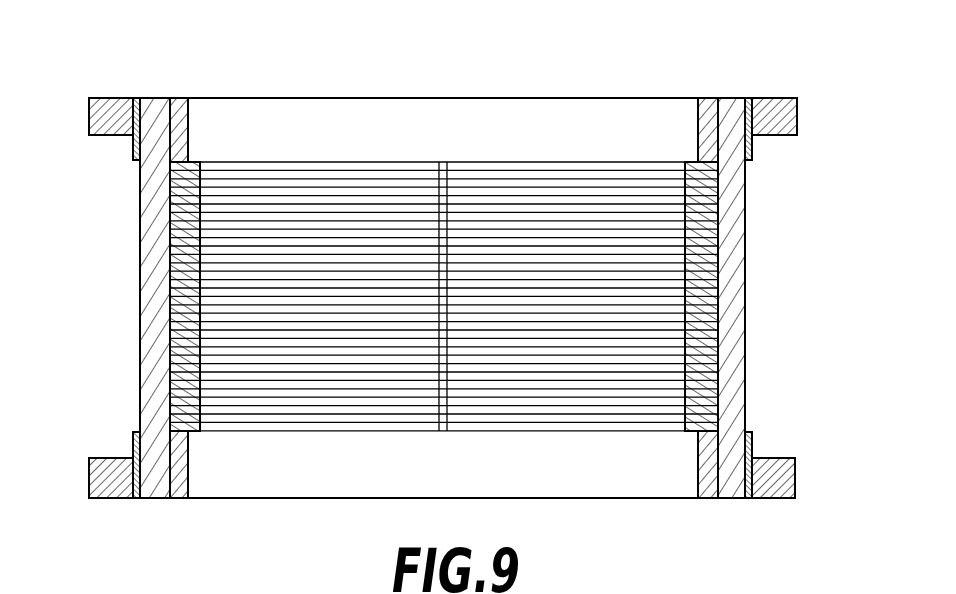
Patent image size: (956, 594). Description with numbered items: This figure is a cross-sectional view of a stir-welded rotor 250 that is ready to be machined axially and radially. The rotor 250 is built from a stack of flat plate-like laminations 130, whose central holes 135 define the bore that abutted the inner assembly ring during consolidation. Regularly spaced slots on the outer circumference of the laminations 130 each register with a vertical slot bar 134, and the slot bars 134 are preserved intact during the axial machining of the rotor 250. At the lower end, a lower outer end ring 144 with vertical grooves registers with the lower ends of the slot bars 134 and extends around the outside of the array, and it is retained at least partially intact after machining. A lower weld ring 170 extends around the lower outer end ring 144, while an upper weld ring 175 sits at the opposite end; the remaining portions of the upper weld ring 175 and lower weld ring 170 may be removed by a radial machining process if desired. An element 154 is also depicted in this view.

The stir-welded rotor 250 is at (473, 72).
The central holes 135 is at (539, 234).
The laminations 130 is at (174, 264).
The slot bars 134 is at (152, 327).
The upper seal ring 154 is at (133, 155).
The lower outer end ring 144 is at (133, 442).
The upper weld ring 175 is at (89, 118).
The lower weld ring 170 is at (89, 487).